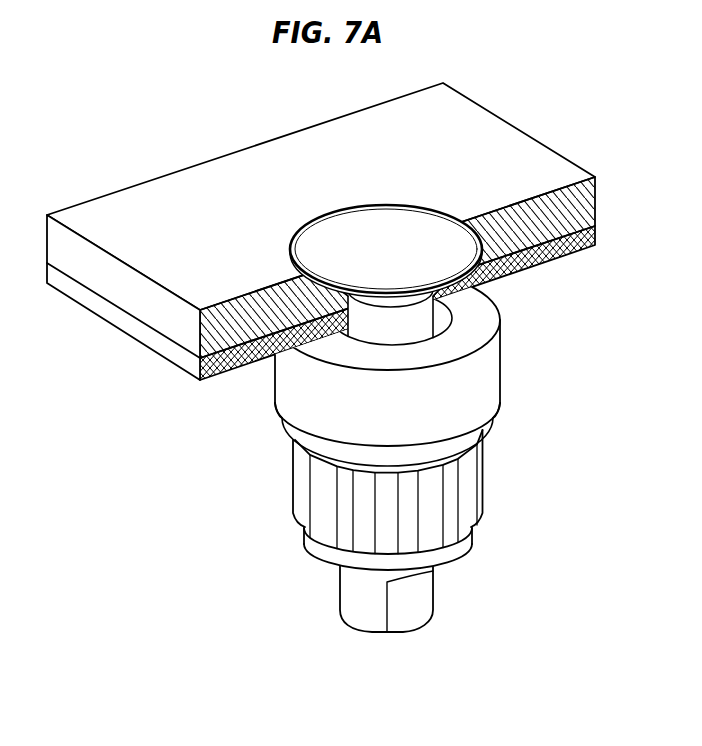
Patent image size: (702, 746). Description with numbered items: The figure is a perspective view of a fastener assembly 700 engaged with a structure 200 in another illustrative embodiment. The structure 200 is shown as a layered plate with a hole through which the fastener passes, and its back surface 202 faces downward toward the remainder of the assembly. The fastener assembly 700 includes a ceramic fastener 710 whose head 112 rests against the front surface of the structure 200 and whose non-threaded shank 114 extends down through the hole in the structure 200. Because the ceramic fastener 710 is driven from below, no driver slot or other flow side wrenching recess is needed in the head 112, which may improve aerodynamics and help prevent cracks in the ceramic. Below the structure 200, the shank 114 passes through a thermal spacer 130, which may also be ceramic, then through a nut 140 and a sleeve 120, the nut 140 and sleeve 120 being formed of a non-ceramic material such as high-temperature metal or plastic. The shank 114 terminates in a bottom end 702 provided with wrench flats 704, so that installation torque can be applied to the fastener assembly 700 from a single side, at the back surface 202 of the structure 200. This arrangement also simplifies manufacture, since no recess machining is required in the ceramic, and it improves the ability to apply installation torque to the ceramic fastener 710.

The structure 200 is at (523, 109).
The back surface 202 is at (133, 355).
The fastener assembly 700 is at (292, 414).
The ceramic fastener 710 is at (377, 252).
The head 112 is at (405, 235).
The non-threaded shank 114 is at (418, 323).
The thermal spacer 130 is at (374, 368).
The nut 140 is at (276, 478).
The sleeve 120 is at (302, 552).
The bottom end 702 is at (375, 614).
The wrench flats 704 is at (417, 599).